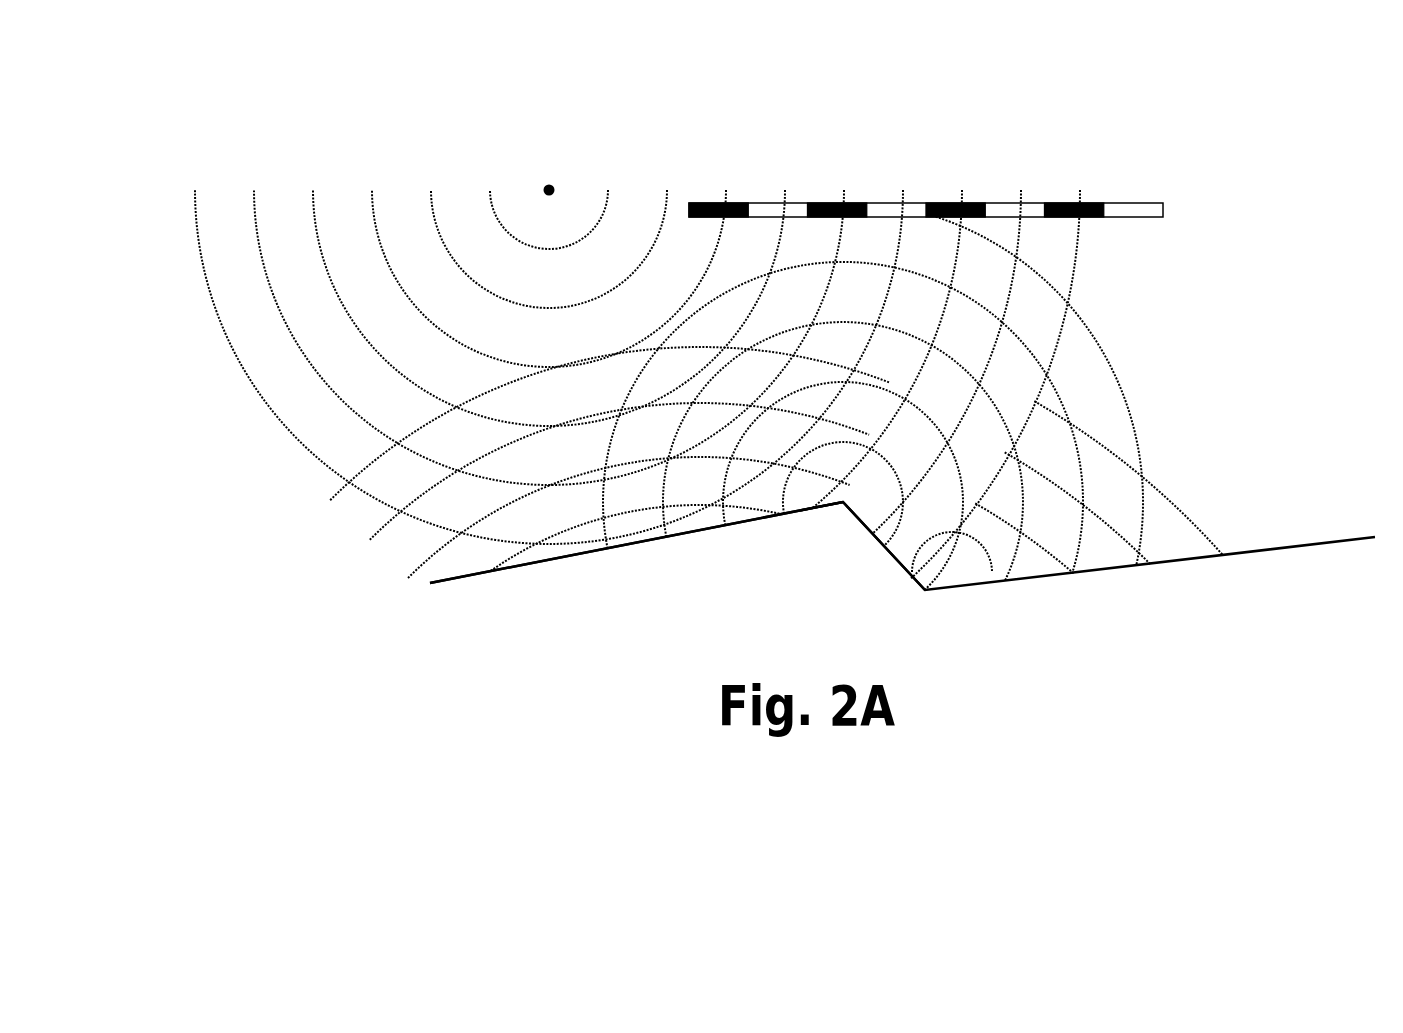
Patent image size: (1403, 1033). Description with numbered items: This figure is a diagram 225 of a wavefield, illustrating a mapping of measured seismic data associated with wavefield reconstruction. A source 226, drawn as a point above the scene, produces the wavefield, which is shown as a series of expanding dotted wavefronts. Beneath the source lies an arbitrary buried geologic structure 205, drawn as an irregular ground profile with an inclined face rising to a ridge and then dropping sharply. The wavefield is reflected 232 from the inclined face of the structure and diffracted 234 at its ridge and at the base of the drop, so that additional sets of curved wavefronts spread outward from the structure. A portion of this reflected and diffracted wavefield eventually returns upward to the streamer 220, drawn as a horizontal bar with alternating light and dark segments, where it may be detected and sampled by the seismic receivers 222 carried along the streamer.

The buried geologic structure 205 is at (1271, 558).
The streamer 220 is at (931, 213).
The seismic receivers 222 is at (1099, 222).
The diagram 225 is at (820, 88).
The source 226 is at (548, 182).
The reflection 232 is at (628, 548).
The diffraction 234 is at (912, 589).